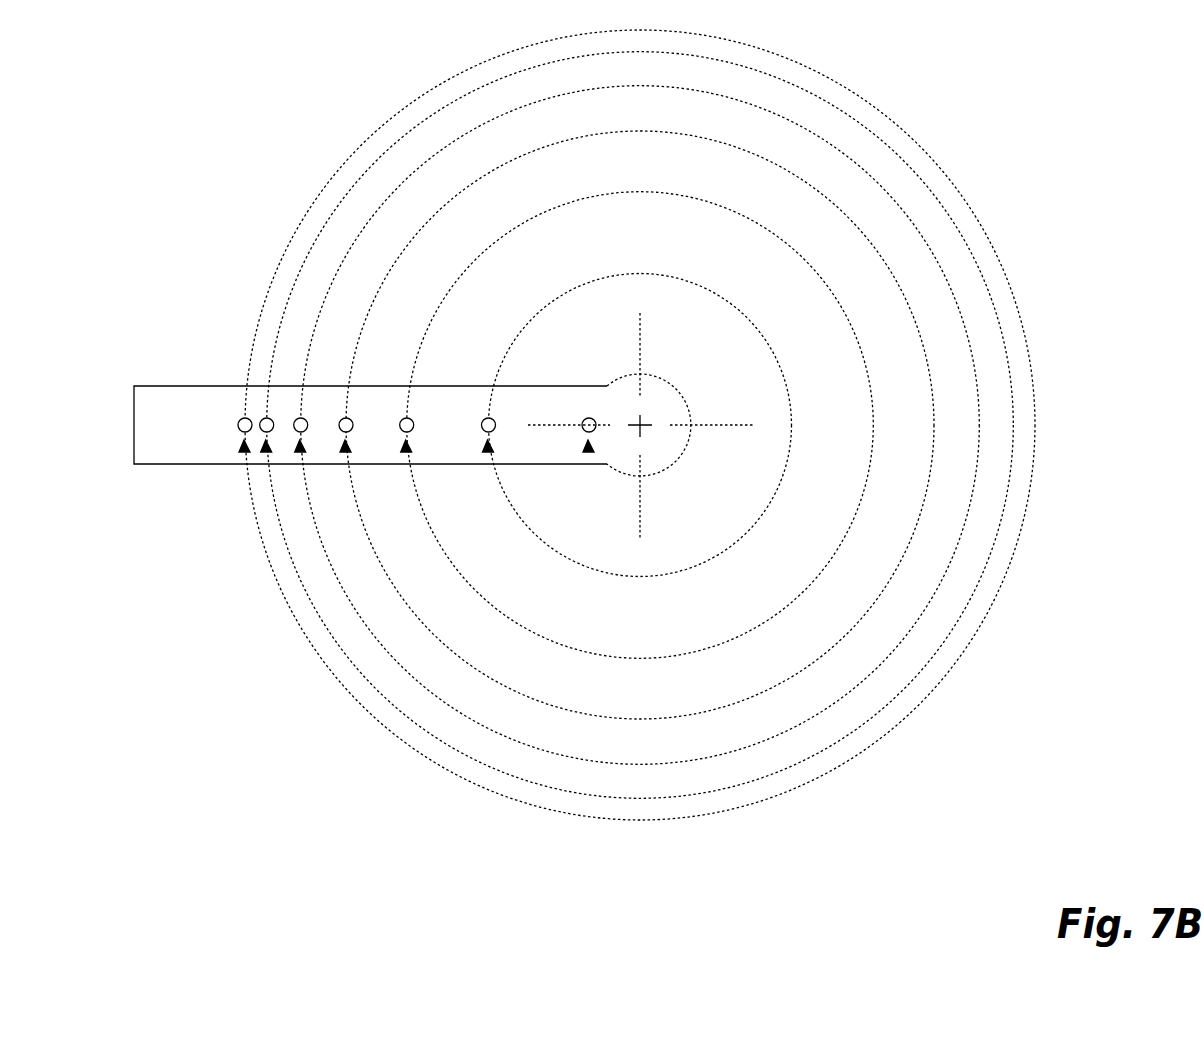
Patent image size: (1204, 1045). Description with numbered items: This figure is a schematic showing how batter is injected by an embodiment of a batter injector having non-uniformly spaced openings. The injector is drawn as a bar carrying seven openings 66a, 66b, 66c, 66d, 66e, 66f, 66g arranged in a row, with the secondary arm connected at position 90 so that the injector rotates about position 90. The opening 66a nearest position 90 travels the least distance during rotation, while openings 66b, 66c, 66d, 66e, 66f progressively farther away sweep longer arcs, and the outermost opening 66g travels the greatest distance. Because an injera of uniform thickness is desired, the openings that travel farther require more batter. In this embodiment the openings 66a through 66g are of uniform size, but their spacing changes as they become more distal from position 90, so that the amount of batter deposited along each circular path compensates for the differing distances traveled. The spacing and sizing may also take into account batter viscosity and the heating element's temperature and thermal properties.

The opening 66a is at (592, 425).
The opening 66b is at (634, 425).
The opening 66c is at (632, 425).
The opening 66d is at (632, 425).
The opening 66e is at (632, 425).
The opening 66f is at (260, 420).
The opening 66g is at (240, 418).
The position 90 is at (655, 398).